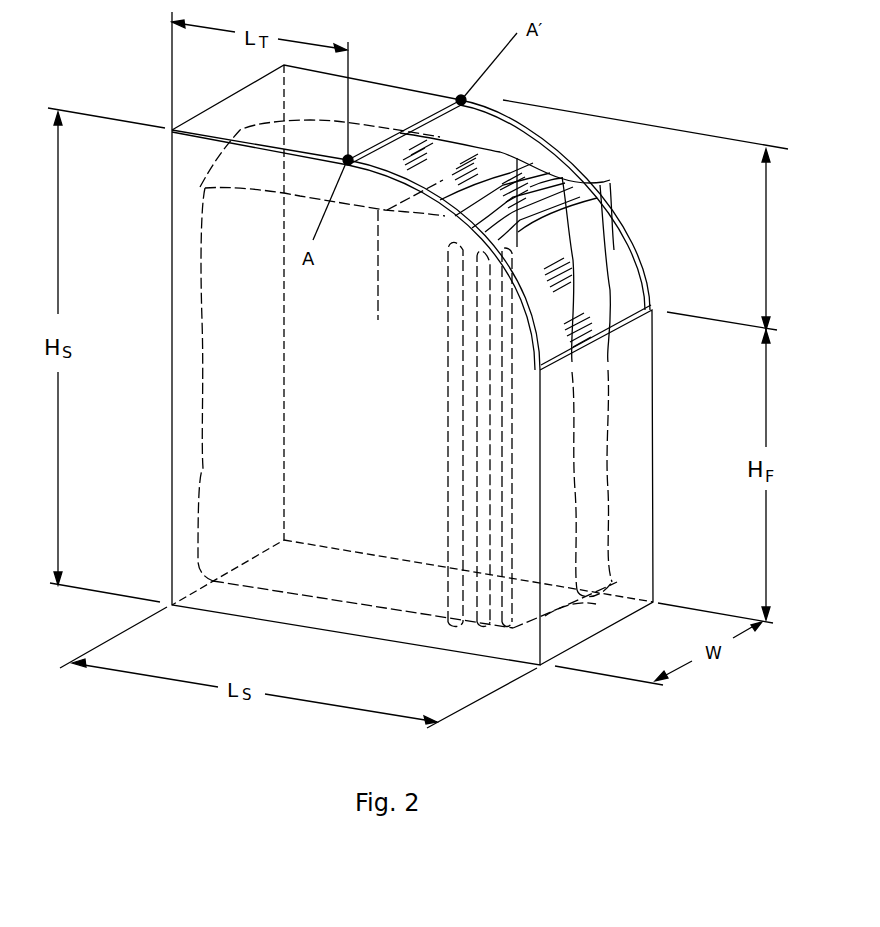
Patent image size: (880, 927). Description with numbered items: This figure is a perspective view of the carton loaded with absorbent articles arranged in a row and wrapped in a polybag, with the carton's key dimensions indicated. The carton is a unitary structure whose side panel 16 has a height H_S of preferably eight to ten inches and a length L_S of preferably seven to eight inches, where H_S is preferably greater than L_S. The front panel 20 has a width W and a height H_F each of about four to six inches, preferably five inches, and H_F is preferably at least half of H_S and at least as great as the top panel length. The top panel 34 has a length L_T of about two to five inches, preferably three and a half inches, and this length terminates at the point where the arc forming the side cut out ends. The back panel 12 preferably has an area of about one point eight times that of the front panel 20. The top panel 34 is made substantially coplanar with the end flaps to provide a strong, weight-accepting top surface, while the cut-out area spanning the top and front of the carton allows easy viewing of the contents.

The back panel 12 is at (188, 272).
The side panel 16 is at (380, 426).
The front panel 20 is at (576, 479).
The top panel 34 is at (398, 111).